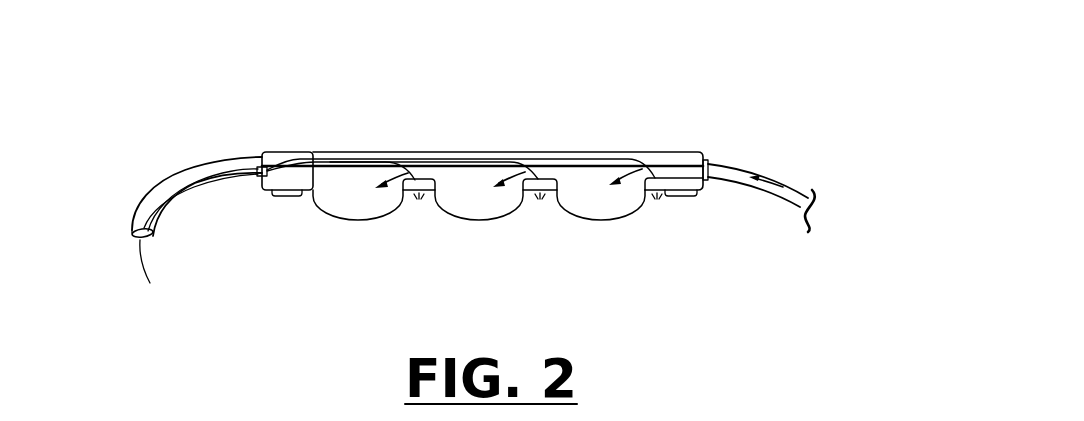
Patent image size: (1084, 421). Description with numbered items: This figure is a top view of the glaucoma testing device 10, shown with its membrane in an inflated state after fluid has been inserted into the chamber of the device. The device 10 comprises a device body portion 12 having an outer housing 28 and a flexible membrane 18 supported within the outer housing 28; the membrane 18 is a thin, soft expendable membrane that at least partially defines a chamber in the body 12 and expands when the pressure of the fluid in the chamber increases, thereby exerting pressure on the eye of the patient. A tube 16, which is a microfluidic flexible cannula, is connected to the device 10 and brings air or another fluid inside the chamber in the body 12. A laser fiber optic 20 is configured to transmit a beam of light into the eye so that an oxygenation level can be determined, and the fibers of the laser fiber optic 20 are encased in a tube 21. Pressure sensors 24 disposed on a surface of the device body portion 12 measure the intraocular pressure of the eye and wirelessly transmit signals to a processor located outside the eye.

The glaucoma testing device 10 is at (237, 292).
The device body portion 12 is at (277, 152).
The tube 16 is at (790, 181).
The flexible membrane 18 is at (328, 216).
The laser fiber optic 20 is at (214, 162).
The tube 21 is at (183, 169).
The pressure sensors 24 is at (278, 196).
The outer housing 28 is at (307, 152).